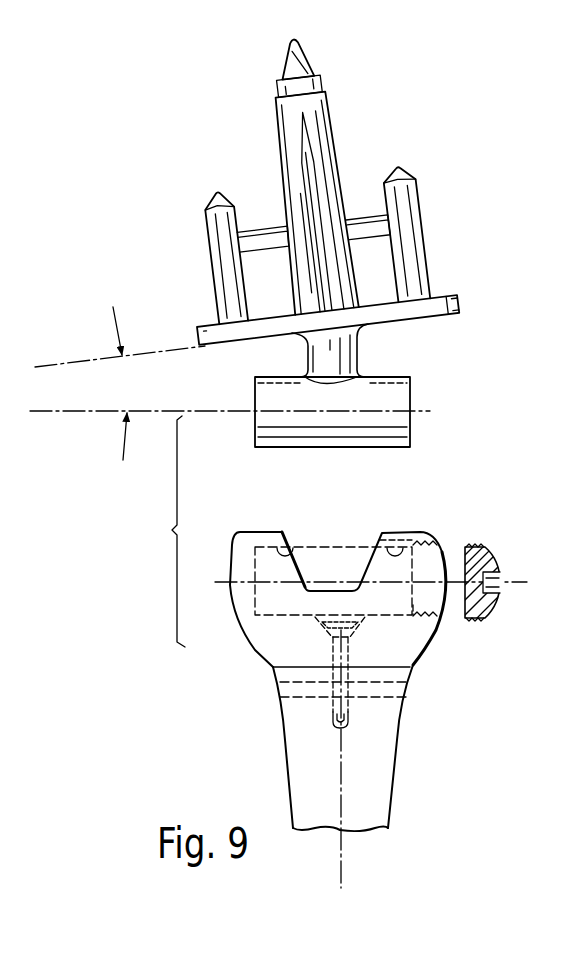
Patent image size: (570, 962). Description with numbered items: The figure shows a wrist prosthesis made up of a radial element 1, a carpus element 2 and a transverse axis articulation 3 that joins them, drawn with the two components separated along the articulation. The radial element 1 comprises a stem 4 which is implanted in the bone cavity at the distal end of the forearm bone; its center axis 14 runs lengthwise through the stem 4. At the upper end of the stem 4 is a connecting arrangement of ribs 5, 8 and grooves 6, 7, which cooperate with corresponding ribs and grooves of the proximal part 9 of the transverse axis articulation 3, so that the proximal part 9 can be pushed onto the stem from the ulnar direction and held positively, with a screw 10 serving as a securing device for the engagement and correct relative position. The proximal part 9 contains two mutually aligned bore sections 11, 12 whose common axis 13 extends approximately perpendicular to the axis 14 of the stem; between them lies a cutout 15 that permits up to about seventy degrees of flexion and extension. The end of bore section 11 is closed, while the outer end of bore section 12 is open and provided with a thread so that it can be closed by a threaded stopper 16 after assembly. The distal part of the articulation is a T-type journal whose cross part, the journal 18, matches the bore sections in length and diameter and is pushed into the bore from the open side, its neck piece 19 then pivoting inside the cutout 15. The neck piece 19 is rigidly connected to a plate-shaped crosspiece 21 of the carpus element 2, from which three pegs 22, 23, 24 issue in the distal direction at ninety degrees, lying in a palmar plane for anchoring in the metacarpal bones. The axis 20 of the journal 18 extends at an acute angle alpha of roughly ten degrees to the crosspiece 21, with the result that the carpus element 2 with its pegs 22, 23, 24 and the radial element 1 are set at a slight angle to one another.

The radial element 1 is at (280, 750).
The carpus element 2 is at (182, 282).
The transverse axis articulation 3 is at (167, 531).
The stem 4 is at (378, 752).
The rib 5 is at (384, 672).
The groove 6 is at (309, 697).
The groove 7 is at (300, 690).
The rib 8 is at (410, 683).
The proximal part of the transverse axis articulation 9 is at (278, 640).
The screw 10 is at (340, 654).
The bore section 11 is at (293, 548).
The bore section 12 is at (402, 543).
The axis of the bore sections 13 is at (323, 590).
The center axis of the stem 14 is at (340, 800).
The cutout 15 is at (364, 560).
The threaded stopper 16 is at (480, 547).
The journal 18 is at (400, 432).
The neck piece 19 is at (337, 366).
The axis of the T-type journal 20 is at (425, 412).
The crosspiece 21 is at (453, 304).
The peg 22 is at (211, 229).
The peg 23 is at (280, 90).
The peg 24 is at (410, 205).